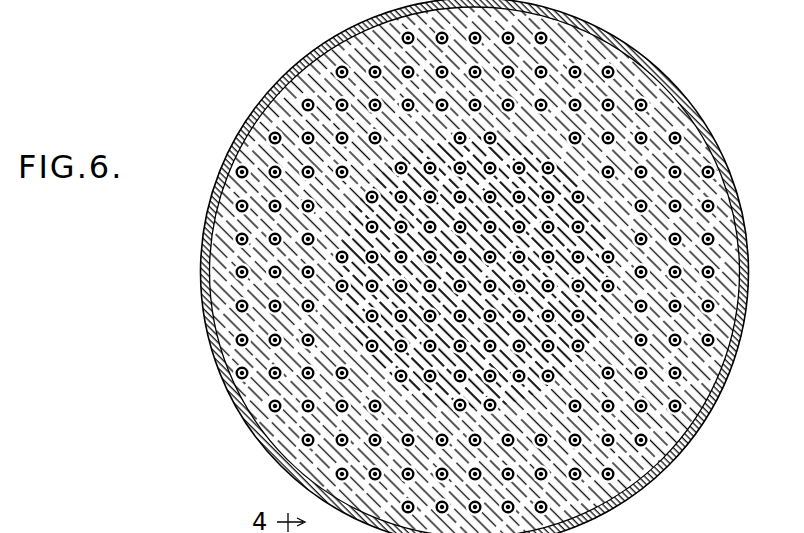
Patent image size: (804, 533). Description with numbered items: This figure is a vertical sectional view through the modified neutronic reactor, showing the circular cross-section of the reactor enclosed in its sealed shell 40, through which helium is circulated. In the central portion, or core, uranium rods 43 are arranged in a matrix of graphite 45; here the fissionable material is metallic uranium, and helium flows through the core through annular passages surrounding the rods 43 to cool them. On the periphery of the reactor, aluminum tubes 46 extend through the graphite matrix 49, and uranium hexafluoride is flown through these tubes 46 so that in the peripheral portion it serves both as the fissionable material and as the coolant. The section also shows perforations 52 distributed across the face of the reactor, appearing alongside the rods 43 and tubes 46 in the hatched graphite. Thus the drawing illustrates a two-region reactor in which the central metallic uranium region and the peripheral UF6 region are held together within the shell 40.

The sealed shell 40 is at (688, 447).
The uranium rods 43 is at (580, 347).
The graphite matrix of core 45 is at (413, 360).
The aluminum tubes 46 is at (641, 107).
The graphite matrix of periphery 49 is at (403, 53).
The inner perforations 52 is at (583, 228).